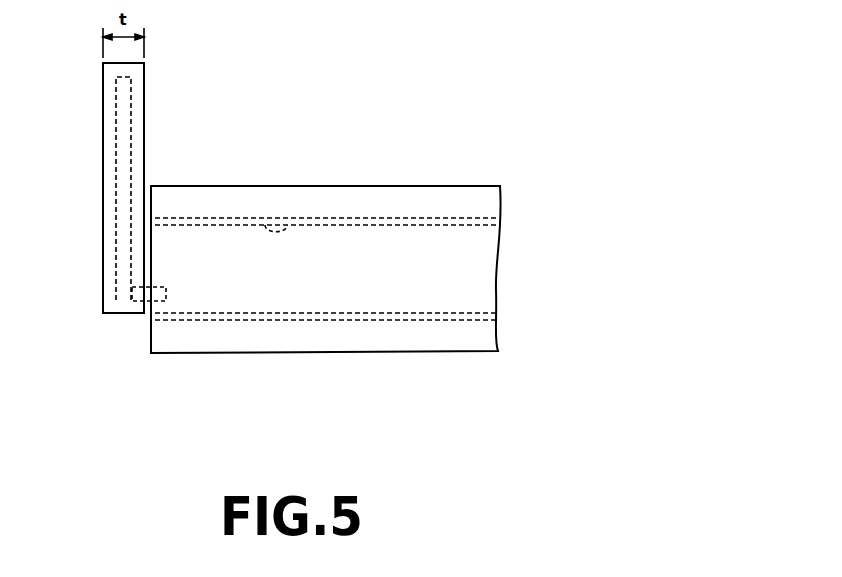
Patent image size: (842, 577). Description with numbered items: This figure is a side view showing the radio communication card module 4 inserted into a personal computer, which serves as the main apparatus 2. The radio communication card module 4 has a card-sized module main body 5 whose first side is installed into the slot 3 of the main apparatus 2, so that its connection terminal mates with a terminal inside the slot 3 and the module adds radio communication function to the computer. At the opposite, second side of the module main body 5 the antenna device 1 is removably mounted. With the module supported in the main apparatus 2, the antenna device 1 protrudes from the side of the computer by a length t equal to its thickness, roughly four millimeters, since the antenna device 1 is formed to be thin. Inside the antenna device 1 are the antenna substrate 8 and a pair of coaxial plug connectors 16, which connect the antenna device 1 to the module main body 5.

The antenna device 1 is at (108, 210).
The main apparatus 2 is at (433, 193).
The slot 3 is at (285, 225).
The radio communication card module 4 is at (204, 169).
The module main body 5 is at (312, 298).
The antenna substrate 8 is at (116, 136).
The coaxial plug connectors 16 is at (133, 316).